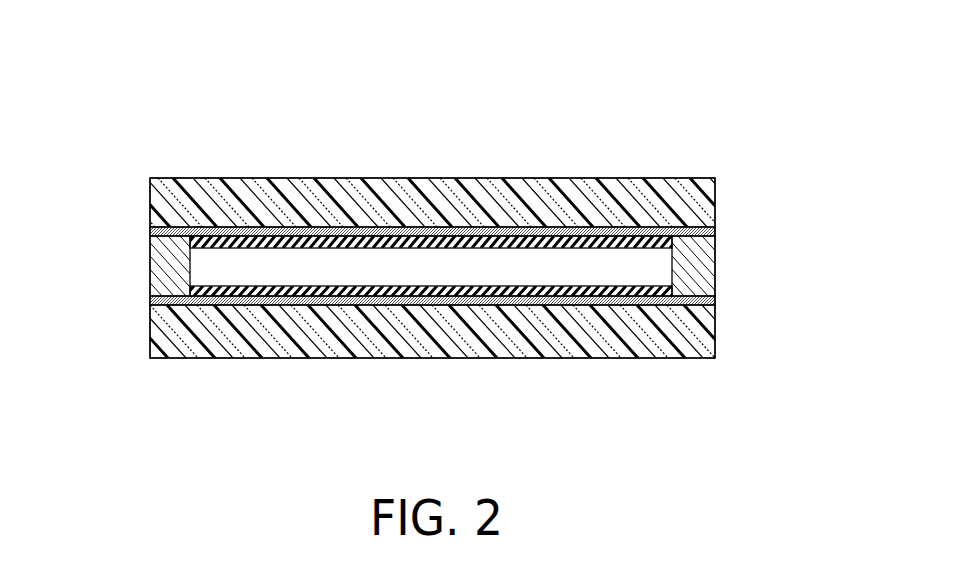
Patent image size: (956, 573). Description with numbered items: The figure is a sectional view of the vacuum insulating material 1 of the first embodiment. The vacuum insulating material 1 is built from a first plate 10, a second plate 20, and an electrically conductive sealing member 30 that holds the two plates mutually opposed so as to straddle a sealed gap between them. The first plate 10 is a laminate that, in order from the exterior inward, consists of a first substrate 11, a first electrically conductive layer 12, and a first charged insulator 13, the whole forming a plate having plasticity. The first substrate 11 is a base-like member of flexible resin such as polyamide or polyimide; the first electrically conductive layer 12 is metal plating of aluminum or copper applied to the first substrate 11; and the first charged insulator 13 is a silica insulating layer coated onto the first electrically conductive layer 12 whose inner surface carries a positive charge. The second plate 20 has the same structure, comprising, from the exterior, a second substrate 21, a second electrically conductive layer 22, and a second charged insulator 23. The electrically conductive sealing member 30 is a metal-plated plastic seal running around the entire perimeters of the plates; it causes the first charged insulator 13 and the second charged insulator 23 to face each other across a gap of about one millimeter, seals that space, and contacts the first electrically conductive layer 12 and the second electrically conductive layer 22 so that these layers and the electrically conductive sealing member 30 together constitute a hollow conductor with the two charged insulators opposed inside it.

The vacuum insulating material 1 is at (429, 227).
The first plate 10 is at (457, 172).
The first substrate 11 is at (715, 197).
The first electrically conductive layer 12 is at (715, 230).
The first charged insulator 13 is at (653, 249).
The second plate 20 is at (457, 360).
The second substrate 21 is at (715, 335).
The second electrically conductive layer 22 is at (715, 303).
The second charged insulator 23 is at (660, 286).
The electrically conductive sealing member 30 is at (150, 265).